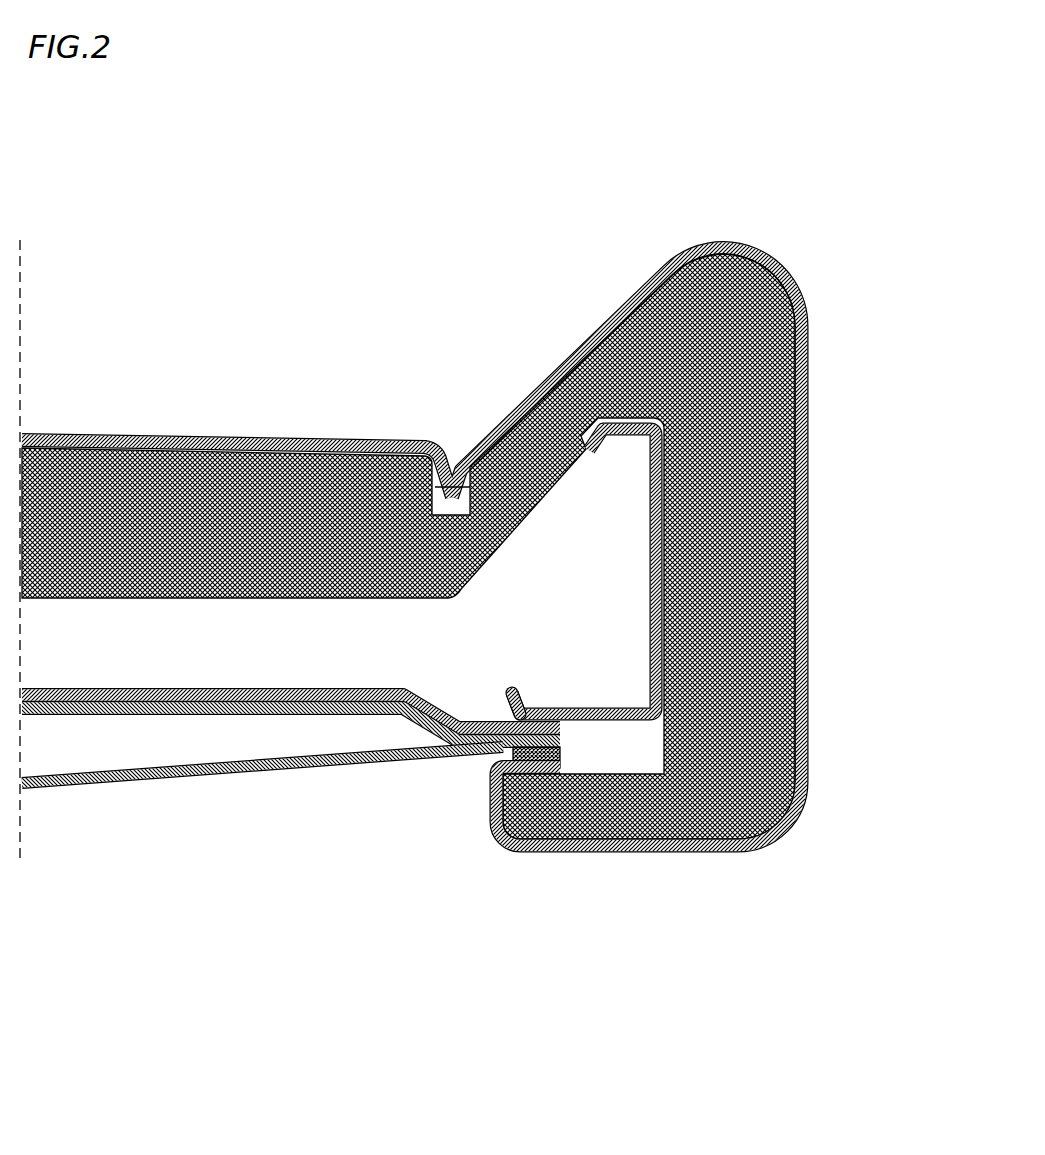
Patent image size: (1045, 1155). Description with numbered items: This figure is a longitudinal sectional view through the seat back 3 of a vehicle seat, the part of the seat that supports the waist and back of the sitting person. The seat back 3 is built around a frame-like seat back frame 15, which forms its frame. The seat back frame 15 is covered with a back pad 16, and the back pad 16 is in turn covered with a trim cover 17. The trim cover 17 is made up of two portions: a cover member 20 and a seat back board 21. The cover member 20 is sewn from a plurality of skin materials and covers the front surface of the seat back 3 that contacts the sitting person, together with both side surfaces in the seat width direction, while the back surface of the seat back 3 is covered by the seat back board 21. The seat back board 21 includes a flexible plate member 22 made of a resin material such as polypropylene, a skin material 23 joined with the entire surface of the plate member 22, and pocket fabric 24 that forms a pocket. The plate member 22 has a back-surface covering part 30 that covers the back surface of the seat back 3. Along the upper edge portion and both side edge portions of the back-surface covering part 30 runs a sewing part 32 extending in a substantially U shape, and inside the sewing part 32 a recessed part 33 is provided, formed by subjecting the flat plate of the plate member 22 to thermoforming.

The seat back 3 is at (752, 232).
The seat back frame 15 is at (650, 547).
The back pad 16 is at (753, 388).
The trim cover 17 is at (412, 855).
The cover member 20 is at (649, 891).
The seat back board 21 is at (291, 822).
The plate member 22 is at (291, 777).
The skin material 23 is at (187, 717).
The pocket fabric 24 is at (340, 922).
The back-surface covering part 30 is at (459, 641).
The sewing part 32 is at (529, 671).
The recessed part 33 is at (355, 688).